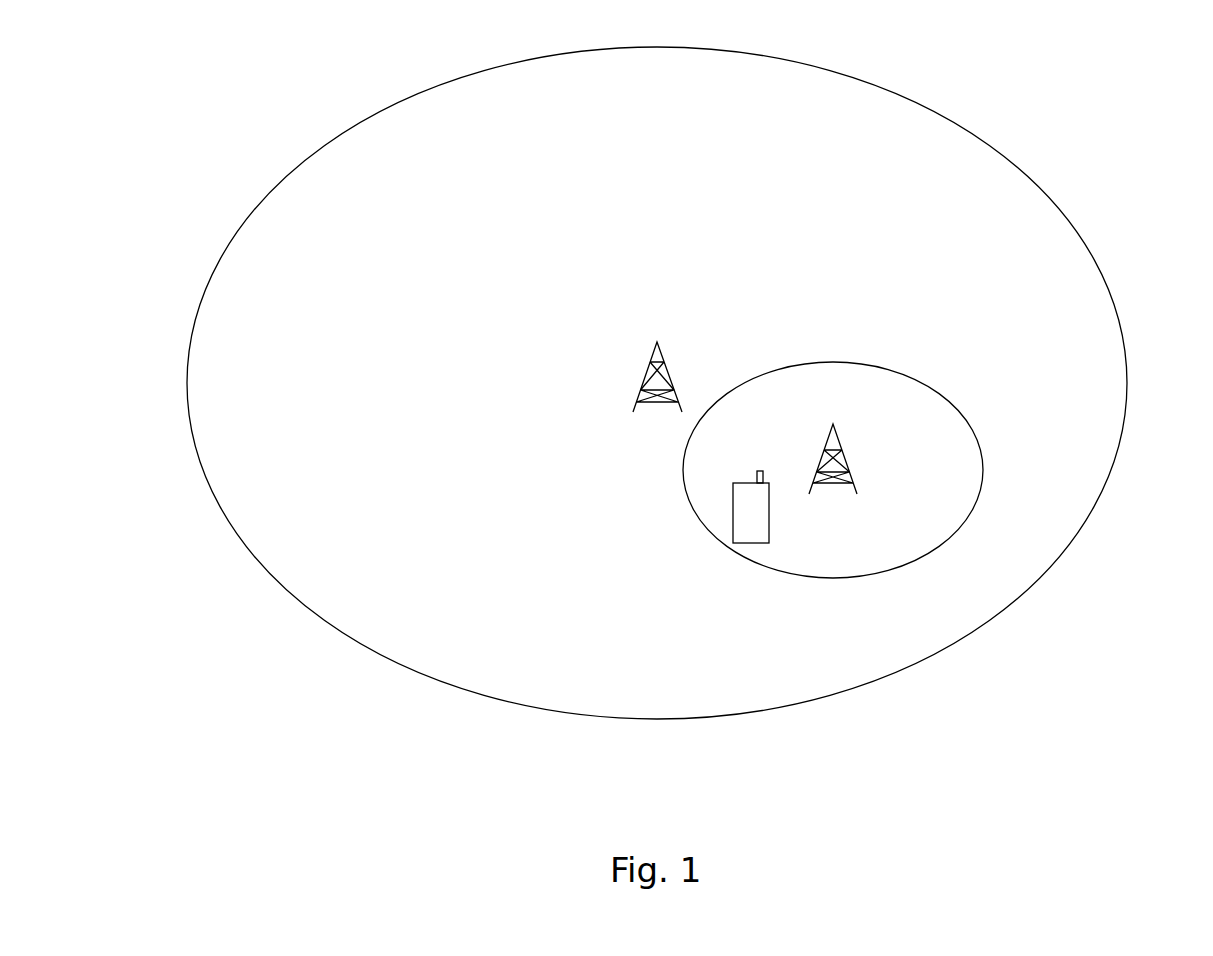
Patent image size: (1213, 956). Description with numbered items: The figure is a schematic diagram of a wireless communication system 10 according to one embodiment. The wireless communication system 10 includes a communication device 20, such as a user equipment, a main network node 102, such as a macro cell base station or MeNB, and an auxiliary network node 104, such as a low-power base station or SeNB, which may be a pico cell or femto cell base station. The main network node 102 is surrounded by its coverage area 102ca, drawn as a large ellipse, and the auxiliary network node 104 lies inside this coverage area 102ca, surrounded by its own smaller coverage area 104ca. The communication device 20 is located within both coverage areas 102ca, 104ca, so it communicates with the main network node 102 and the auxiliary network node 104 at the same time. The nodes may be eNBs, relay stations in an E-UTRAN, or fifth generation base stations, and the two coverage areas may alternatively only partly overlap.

The wireless communication system 10 is at (271, 121).
The main network node 102 is at (647, 372).
The coverage area of the main network node 102ca is at (1032, 182).
The auxiliary network node 104 is at (845, 453).
The coverage area of the auxiliary network node 104ca is at (920, 383).
The communication device 20 is at (742, 525).